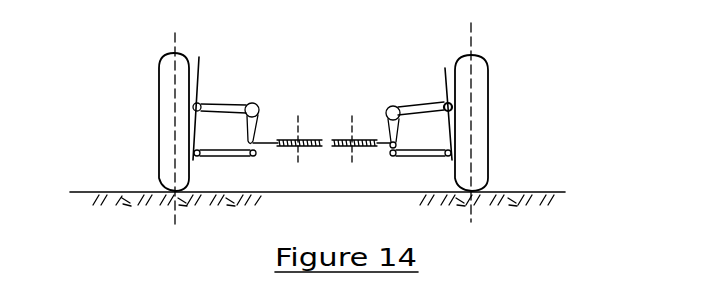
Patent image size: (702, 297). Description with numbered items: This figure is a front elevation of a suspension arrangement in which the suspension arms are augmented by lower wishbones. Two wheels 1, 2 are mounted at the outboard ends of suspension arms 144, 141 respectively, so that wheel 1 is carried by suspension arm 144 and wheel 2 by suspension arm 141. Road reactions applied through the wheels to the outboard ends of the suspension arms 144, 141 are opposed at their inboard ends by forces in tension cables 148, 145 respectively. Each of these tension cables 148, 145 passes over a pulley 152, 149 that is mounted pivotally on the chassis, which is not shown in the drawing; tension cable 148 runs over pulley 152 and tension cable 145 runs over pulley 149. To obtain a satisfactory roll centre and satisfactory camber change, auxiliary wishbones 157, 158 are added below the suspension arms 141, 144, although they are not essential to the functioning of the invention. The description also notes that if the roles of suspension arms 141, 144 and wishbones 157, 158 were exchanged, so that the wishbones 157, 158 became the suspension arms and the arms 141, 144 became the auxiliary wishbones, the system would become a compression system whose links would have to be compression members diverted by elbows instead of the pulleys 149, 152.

The wheel 1 is at (478, 53).
The wheel 2 is at (166, 53).
The suspension arm 141 is at (216, 99).
The suspension arm 144 is at (425, 101).
The tension cable 145 is at (266, 128).
The tension cable 148 is at (382, 150).
The pulley 149 is at (306, 142).
The pulley 152 is at (335, 150).
The auxiliary wishbone 157 is at (220, 159).
The auxiliary wishbone 158 is at (441, 171).